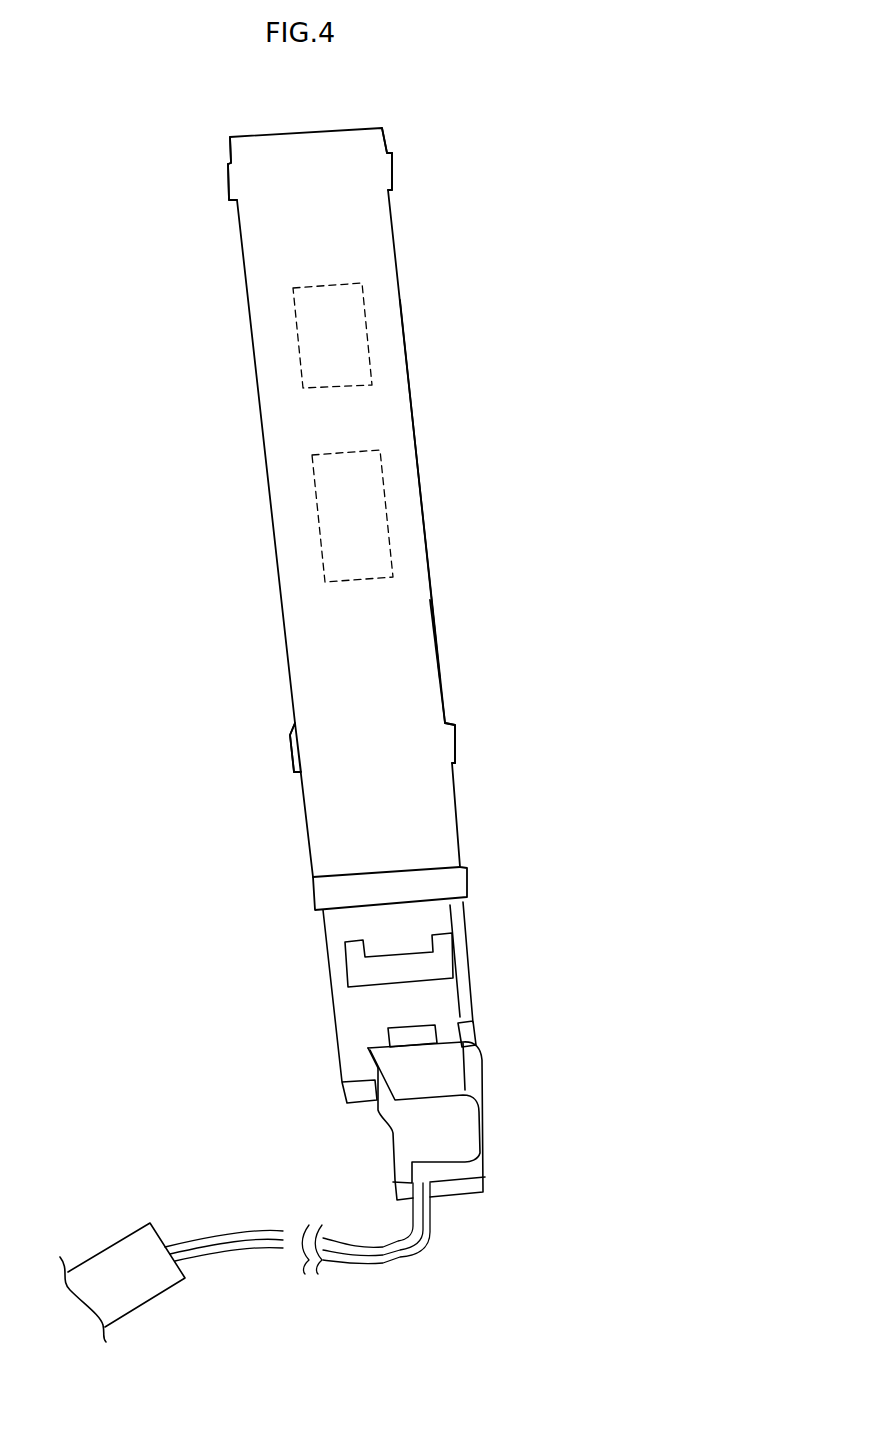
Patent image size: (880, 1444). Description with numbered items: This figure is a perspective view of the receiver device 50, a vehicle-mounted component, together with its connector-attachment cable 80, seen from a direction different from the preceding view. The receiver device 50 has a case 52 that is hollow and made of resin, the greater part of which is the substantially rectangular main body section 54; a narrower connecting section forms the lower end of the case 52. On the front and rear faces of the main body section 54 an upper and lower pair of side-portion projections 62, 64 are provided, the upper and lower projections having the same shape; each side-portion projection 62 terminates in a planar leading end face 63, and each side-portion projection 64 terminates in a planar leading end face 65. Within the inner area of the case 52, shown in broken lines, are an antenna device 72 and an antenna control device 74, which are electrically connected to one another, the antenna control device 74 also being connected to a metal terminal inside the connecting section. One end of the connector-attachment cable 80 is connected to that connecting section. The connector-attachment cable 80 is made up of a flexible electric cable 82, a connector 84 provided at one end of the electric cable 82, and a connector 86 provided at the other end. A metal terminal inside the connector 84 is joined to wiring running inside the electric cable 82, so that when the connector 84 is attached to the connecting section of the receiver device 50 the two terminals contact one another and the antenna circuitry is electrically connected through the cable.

The receiver device 50 is at (430, 270).
The case 52 is at (425, 608).
The main body section 54 is at (430, 680).
The side-portion projection 62 is at (231, 157).
The leading end face 63 is at (229, 181).
The side-portion projection 64 is at (300, 776).
The leading end face 65 is at (292, 750).
The antenna device 72 is at (372, 322).
The antenna control device 74 is at (388, 512).
The connector-attachment cable 80 is at (302, 1060).
The electric cable 82 is at (288, 1231).
The connector 84 is at (342, 1002).
The connector 86 is at (118, 1260).